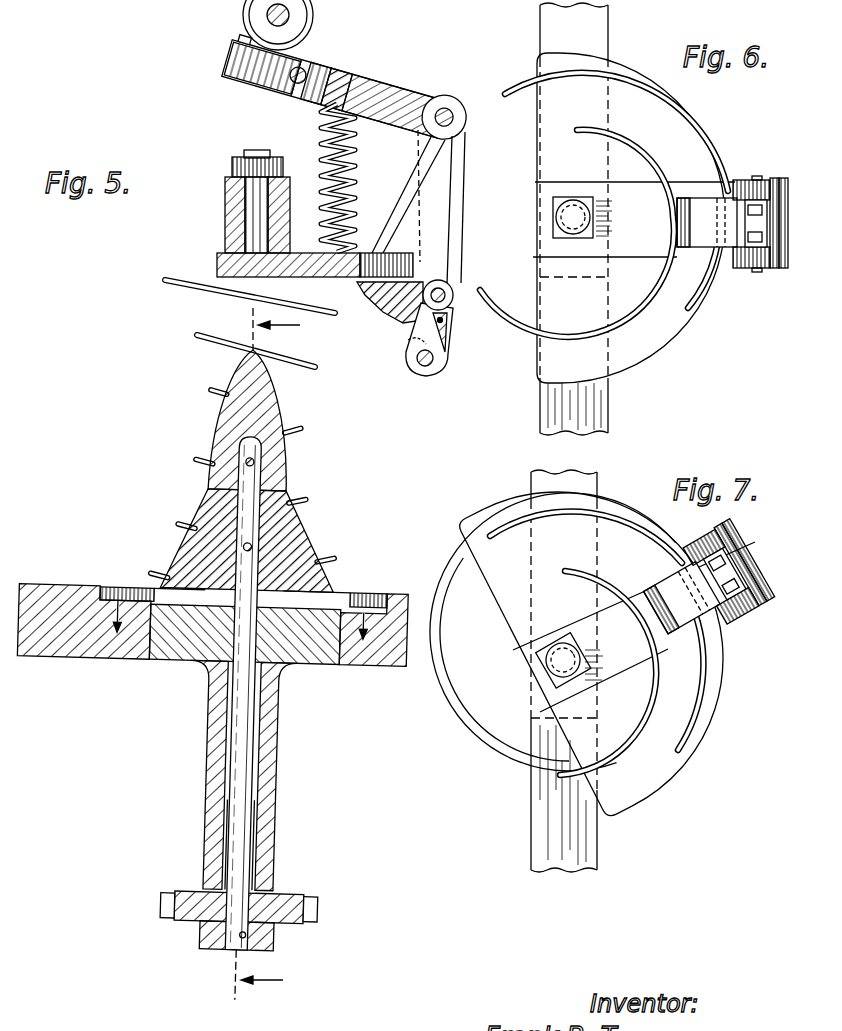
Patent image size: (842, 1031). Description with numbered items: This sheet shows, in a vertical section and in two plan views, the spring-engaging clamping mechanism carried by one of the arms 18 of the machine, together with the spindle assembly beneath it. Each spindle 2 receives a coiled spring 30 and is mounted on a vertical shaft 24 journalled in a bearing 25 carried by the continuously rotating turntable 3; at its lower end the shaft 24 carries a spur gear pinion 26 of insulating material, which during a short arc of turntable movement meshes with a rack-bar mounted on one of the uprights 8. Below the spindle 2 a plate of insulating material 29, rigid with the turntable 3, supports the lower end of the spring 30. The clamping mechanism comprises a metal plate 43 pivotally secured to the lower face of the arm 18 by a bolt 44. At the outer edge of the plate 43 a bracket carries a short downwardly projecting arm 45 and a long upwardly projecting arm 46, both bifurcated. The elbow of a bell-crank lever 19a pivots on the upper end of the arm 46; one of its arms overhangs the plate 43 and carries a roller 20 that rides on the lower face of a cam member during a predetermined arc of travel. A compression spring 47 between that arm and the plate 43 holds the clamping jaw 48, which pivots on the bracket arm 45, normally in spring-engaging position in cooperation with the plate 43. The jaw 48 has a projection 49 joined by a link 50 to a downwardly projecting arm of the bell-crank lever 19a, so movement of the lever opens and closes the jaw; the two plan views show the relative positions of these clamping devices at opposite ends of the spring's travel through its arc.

In FIG. 5, the spindle 2 is at (285, 463).
In FIG. 5, the turntable 3 is at (100, 585).
In FIG. 5, the upright 8 is at (276, 654).
In FIG. 5, the arm 18 is at (225, 225).
In FIG. 6, the arm 18 is at (595, 408).
In FIG. 7, the arm 18 is at (593, 483).
In FIG. 5, the bell-crank lever 19a is at (403, 80).
In FIG. 6, the bell-crank lever 19a is at (774, 178).
In FIG. 5, the roller 20 is at (313, 12).
In FIG. 5, the vertical shaft 24 is at (244, 758).
In FIG. 5, the bearing 25 is at (277, 726).
In FIG. 5, the spur gear pinion 26 is at (277, 902).
In FIG. 5, the plate of insulating material 29 is at (378, 578).
In FIG. 5, the spring 30 is at (316, 372).
In FIG. 6, the spring 30 is at (683, 133).
In FIG. 7, the spring 30 is at (490, 538).
In FIG. 5, the metal plate 43 is at (300, 278).
In FIG. 6, the metal plate 43 is at (697, 333).
In FIG. 7, the metal plate 43 is at (692, 762).
In FIG. 5, the bolt 44 is at (238, 157).
In FIG. 6, the bolt 44 is at (568, 214).
In FIG. 7, the bolt 44 is at (553, 667).
In FIG. 5, the downwardly projecting arm 45 is at (453, 300).
In FIG. 5, the upwardly projecting arm 46 is at (443, 174).
In FIG. 6, the upwardly projecting arm 46 is at (782, 268).
In FIG. 7, the upwardly projecting arm 46 is at (760, 558).
In FIG. 5, the compression spring 47 is at (357, 180).
In FIG. 5, the clamping jaw 48 is at (390, 304).
In FIG. 6, the clamping jaw 48 is at (707, 222).
In FIG. 7, the clamping jaw 48 is at (667, 583).
In FIG. 5, the projection 49 is at (440, 320).
In FIG. 5, the link 50 is at (406, 345).
In FIG. 6, the link 50 is at (743, 198).
In FIG. 7, the link 50 is at (733, 538).